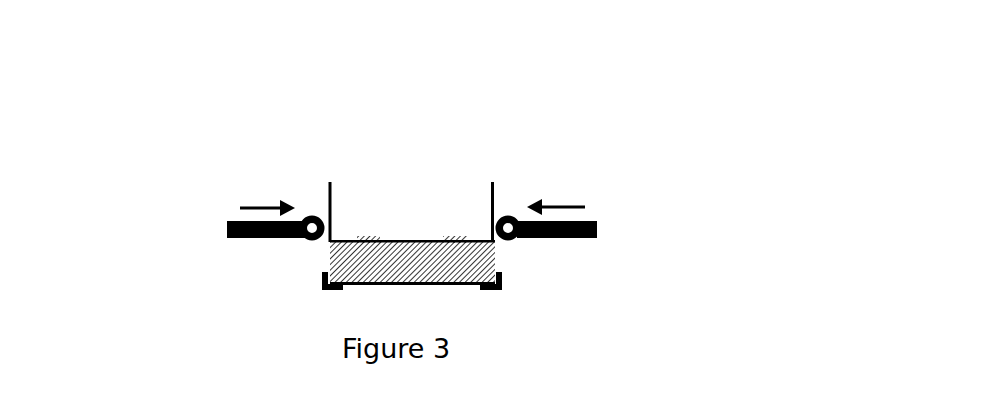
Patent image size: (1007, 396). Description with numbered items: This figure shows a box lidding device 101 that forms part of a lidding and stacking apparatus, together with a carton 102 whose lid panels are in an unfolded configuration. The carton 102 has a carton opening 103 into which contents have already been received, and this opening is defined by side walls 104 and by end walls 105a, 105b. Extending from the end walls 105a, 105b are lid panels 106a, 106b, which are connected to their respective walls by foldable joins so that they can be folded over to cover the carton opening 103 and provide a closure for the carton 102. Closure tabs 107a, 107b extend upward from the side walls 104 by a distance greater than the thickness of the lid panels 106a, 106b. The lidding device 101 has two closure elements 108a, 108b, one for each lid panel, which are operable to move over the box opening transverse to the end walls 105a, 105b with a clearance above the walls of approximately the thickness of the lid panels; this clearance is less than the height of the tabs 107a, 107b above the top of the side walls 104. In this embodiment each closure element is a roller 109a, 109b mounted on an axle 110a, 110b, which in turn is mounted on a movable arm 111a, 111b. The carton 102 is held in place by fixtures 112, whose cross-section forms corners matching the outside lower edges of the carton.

The box lidding device 101 is at (750, 138).
The carton 102 is at (495, 258).
The carton opening 103 is at (387, 198).
The side walls 104 is at (403, 283).
The end wall 105a is at (524, 274).
The end wall 105b is at (294, 278).
The lid panel 106a is at (488, 150).
The lid panel 106b is at (346, 157).
The closure tab 107a is at (524, 274).
The closure tab 107b is at (330, 250).
The closure element 108a is at (523, 185).
The closure element 108b is at (294, 180).
The roller 109a is at (521, 218).
The roller 109b is at (299, 217).
The axle 110a is at (514, 217).
The axle 110b is at (304, 216).
The movable arm 111a is at (598, 232).
The movable arm 111b is at (226, 223).
The fixtures 112 is at (516, 308).